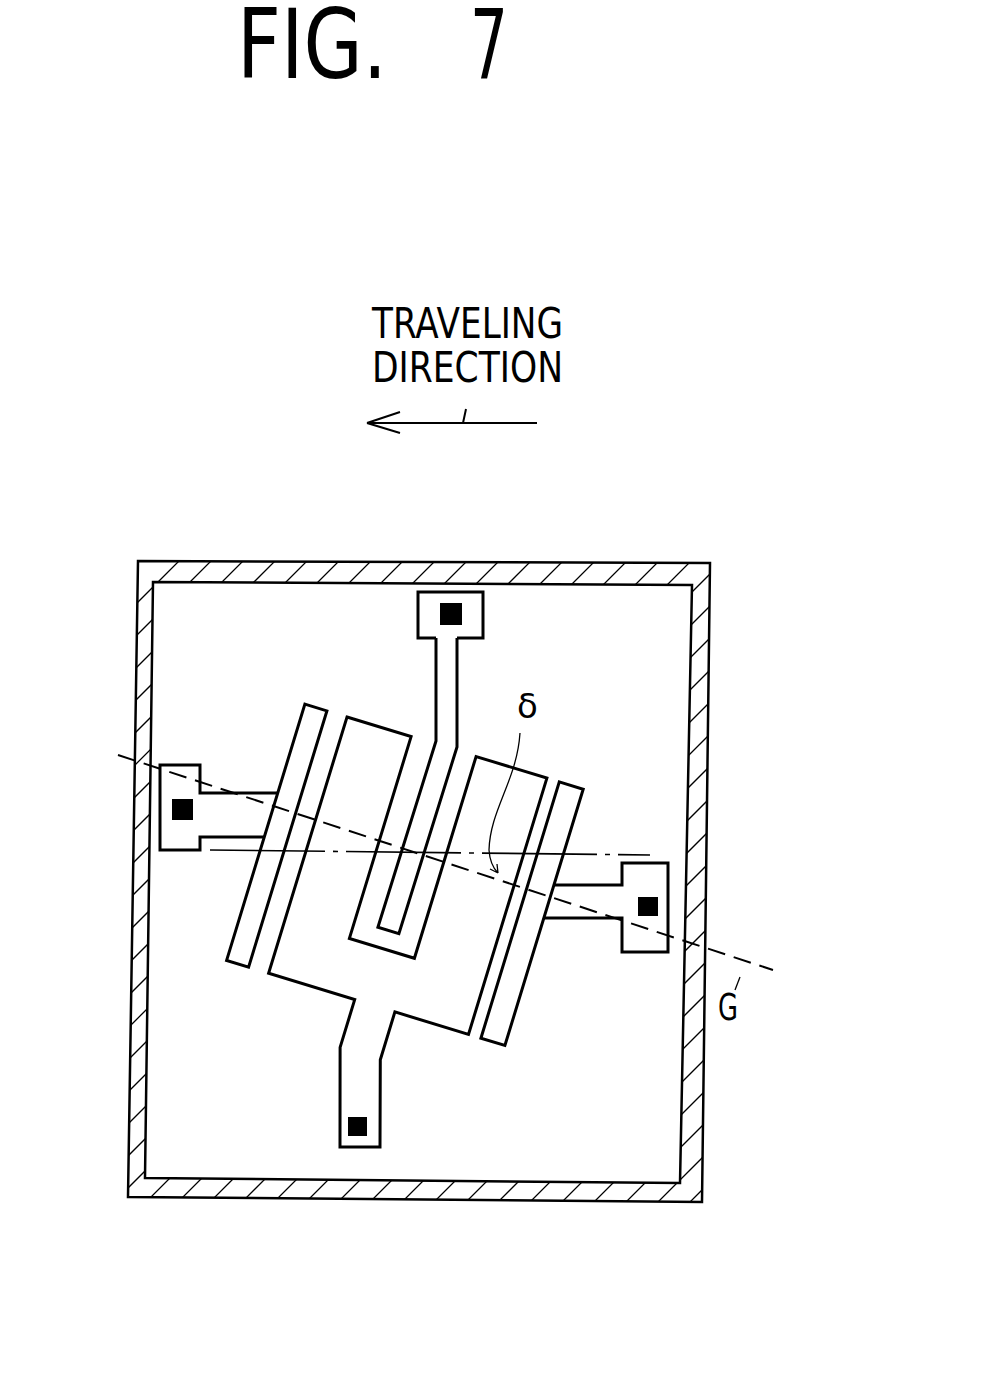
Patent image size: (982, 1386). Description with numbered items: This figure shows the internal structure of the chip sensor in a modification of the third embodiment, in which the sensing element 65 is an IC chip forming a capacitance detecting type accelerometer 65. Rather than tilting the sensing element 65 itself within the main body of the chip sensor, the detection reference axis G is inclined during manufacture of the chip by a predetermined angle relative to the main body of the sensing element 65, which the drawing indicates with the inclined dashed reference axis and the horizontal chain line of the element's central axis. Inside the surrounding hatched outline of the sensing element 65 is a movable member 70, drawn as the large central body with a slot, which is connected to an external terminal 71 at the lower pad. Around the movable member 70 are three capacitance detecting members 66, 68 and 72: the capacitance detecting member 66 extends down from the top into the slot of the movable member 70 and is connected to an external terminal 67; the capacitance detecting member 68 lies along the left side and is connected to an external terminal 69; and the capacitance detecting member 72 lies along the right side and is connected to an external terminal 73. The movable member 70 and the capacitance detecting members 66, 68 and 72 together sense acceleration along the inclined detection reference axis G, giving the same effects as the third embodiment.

The sensing element 65 is at (712, 767).
The capacitance detecting member 66 is at (458, 688).
The external terminal 67 is at (451, 603).
The capacitance detecting member 68 is at (237, 795).
The external terminal 69 is at (172, 809).
The movable member 70 is at (447, 1030).
The external terminal 71 is at (355, 1137).
The capacitance detecting member 72 is at (580, 803).
The external terminal 73 is at (660, 906).